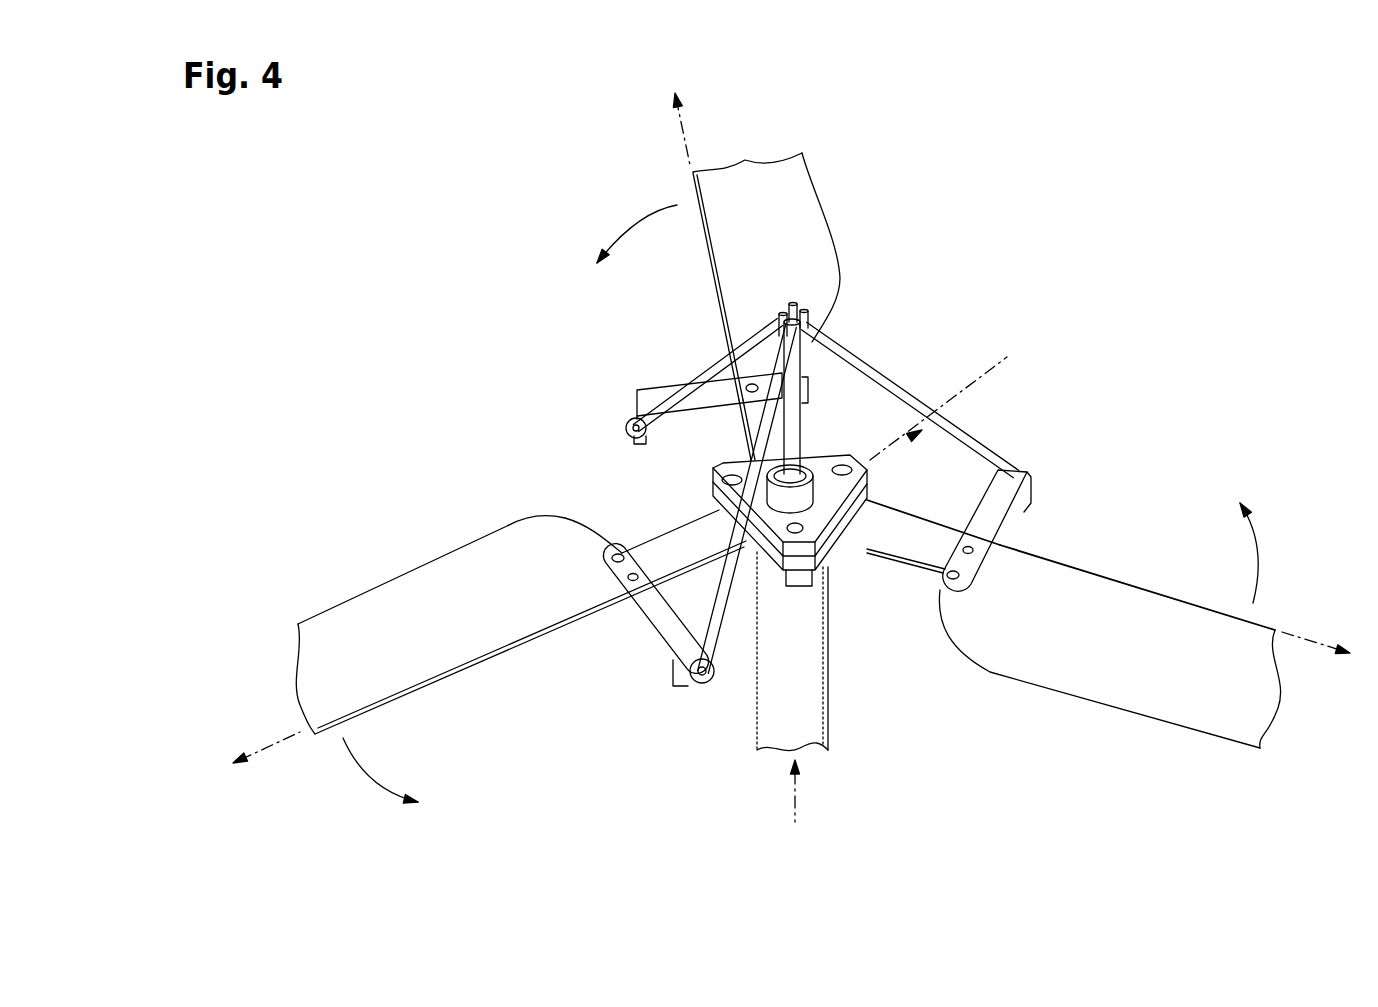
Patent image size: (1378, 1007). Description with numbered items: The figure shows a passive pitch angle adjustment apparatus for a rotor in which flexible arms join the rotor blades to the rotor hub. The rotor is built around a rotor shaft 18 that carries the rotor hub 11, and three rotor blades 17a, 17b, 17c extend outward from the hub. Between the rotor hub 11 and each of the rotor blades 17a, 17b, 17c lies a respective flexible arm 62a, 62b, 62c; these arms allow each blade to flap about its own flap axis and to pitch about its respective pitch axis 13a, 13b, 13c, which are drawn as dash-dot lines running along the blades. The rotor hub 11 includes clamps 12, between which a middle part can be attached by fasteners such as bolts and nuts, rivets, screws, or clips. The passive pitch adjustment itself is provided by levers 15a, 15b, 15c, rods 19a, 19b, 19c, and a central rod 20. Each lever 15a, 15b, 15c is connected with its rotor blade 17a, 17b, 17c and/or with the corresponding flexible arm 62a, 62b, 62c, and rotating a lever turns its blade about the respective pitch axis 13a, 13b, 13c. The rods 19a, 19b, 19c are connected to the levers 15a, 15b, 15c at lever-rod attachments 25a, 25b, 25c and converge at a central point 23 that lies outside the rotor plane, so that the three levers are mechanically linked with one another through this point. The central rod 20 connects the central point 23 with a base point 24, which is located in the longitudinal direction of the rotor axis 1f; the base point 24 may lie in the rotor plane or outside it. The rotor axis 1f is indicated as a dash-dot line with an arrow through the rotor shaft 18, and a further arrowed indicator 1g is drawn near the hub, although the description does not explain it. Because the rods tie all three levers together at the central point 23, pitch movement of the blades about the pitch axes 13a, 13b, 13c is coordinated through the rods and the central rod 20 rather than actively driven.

The rotor axis 1f is at (796, 790).
The direction of rotation 1g is at (1005, 352).
The rotor hub 11 is at (822, 461).
The clamps 12 is at (800, 580).
The pitch axis 13a is at (285, 738).
The pitch axis 13b is at (682, 120).
The pitch axis 13c is at (1297, 633).
The lever 15a is at (678, 633).
The lever 15b is at (655, 393).
The lever 15c is at (1014, 478).
The rotor blade 17a is at (337, 633).
The rotor blade 17b is at (780, 188).
The rotor blade 17c is at (1120, 686).
The rotor shaft 18 is at (800, 722).
The rod 19a is at (723, 597).
The rod 19b is at (718, 367).
The rod 19c is at (878, 374).
The central rod 20 is at (792, 413).
The central point 23 is at (808, 323).
The base point 24 is at (803, 530).
The lever-rod attachment 25a is at (697, 688).
The lever-rod attachment 25b is at (627, 429).
The lever-rod attachment 25c is at (1031, 508).
The flexible arm 62a is at (668, 547).
The flexible arm 62b is at (893, 527).
The flexible arm 62c is at (752, 423).